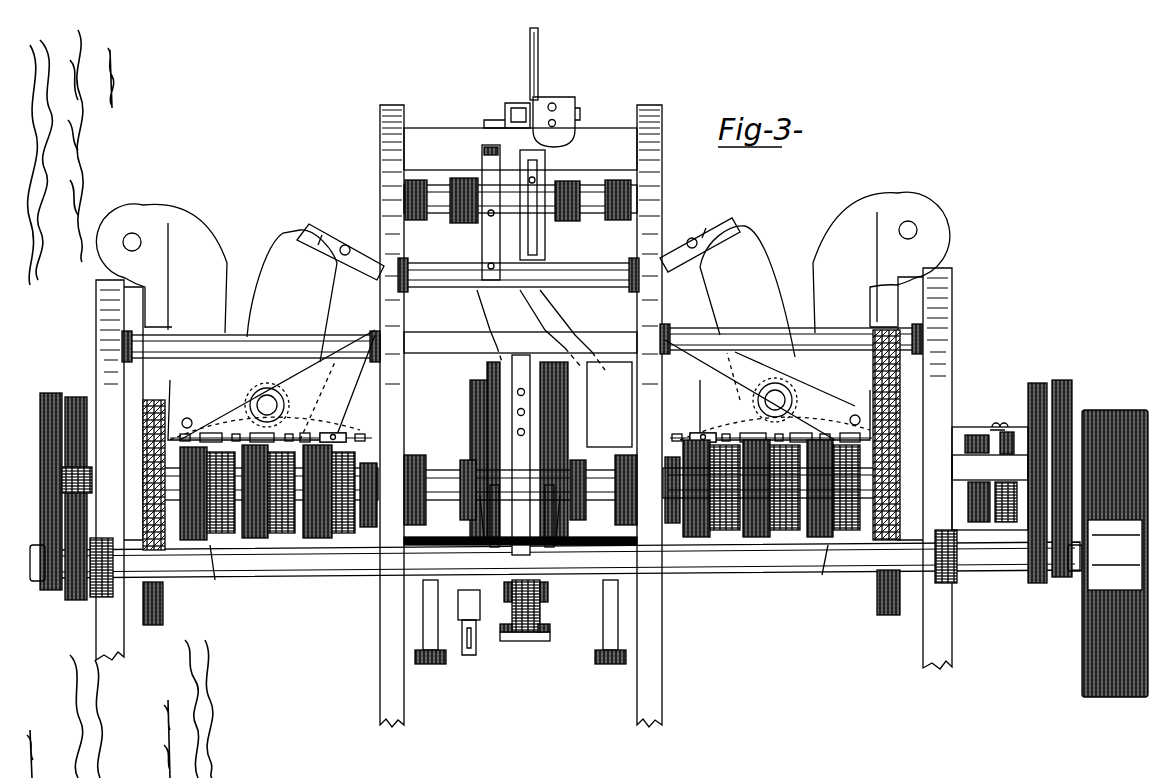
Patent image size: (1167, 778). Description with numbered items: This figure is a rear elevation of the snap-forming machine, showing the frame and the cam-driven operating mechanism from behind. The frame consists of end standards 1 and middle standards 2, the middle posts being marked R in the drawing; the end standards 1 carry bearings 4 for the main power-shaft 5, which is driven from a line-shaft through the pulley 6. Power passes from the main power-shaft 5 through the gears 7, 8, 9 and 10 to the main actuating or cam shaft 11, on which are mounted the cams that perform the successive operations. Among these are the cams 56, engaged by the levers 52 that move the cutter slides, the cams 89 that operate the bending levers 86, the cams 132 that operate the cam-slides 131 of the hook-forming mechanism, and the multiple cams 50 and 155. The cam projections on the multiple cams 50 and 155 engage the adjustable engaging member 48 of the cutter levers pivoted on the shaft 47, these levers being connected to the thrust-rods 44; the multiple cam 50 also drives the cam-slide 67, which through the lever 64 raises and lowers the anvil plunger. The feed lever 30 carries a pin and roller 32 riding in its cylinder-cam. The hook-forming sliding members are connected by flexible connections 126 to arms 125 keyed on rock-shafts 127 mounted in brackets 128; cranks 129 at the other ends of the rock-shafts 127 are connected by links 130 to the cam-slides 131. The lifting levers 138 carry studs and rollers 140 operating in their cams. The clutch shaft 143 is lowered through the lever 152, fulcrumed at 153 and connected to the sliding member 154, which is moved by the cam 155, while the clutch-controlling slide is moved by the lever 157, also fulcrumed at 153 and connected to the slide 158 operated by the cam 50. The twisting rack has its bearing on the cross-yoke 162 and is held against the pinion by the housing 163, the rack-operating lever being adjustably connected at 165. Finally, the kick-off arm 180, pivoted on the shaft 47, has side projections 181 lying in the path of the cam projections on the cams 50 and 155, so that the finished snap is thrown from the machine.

The end standard 1 is at (524, 468).
The middle standard 2 is at (521, 563).
The central frame post (upper) R is at (424, 106).
The bearing 4 is at (106, 535).
The main power-shaft 5 is at (318, 560).
The pulley 6 is at (1115, 553).
The gear 7 is at (36, 582).
The gear 8 is at (51, 393).
The gear 9 is at (92, 475).
The gear 10 is at (76, 397).
The main actuating or cam shaft 11 is at (520, 490).
The lever 30 is at (990, 469).
The pin and roller 32 is at (1008, 425).
The thrust-rod 44 is at (423, 612).
The shaft 47 is at (426, 494).
The adjustable engaging member 48 is at (586, 512).
The multiple cam 50 is at (470, 396).
The lever 52 is at (222, 560).
The cam 56 is at (520, 490).
The lever 64 is at (470, 657).
The cam-slide 67 is at (472, 606).
The lever 86 is at (521, 427).
The cam 89 is at (521, 489).
The arm 125 is at (521, 294).
The flexible connection 126 is at (515, 241).
The rock-shaft 127 is at (265, 388).
The bracket 128 is at (520, 396).
The crank 129 is at (522, 382).
The link 130 is at (522, 262).
The cam-slide 131 is at (132, 233).
The cam 132 is at (165, 600).
The lever 138 is at (518, 424).
The stud and roller 140 is at (521, 474).
The shaft 143 is at (538, 72).
The lever 152 is at (528, 178).
The fulcrum 153 is at (520, 200).
The sliding member 154 is at (555, 315).
The cam 155 is at (568, 412).
The lever 157 is at (482, 156).
The slide 158 is at (487, 366).
The cross-yoke 162 is at (520, 149).
The housing 163 is at (505, 104).
The adjustable connection 165 is at (560, 100).
The arm 180 is at (527, 643).
The side projection 181 is at (496, 641).